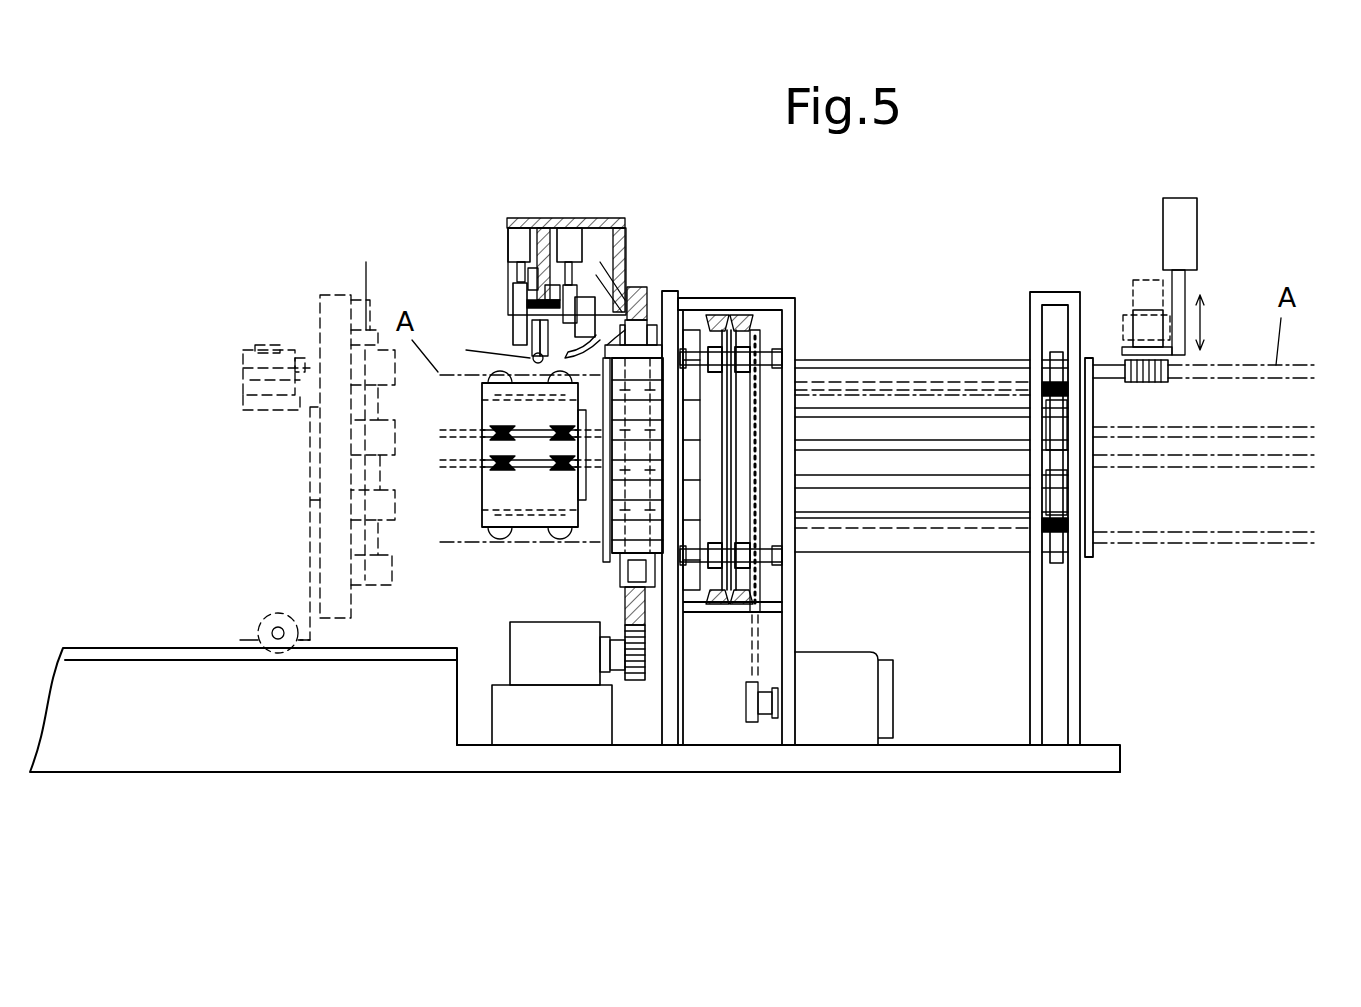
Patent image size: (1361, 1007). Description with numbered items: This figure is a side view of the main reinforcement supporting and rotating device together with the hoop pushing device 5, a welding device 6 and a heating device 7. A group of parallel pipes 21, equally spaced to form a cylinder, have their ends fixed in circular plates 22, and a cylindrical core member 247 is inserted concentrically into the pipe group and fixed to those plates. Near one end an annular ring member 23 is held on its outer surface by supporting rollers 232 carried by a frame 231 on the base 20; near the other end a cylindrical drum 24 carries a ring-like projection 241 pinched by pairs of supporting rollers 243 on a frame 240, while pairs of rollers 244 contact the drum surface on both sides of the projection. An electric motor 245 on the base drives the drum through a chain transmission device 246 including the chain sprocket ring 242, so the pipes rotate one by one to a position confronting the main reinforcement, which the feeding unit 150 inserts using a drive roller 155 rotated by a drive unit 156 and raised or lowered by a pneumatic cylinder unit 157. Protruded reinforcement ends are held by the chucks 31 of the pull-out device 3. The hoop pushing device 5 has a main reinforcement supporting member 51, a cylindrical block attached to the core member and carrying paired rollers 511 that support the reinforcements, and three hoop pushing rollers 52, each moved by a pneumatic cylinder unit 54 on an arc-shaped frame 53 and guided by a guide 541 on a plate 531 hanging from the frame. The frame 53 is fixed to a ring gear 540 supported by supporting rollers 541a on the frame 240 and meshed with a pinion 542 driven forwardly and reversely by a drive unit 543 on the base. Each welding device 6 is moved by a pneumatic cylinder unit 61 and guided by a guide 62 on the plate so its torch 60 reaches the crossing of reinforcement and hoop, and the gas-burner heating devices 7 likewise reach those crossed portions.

The main reinforcement pull-out device 3 is at (264, 256).
The chuck 31 is at (319, 436).
The hoop pushing device 5 is at (524, 247).
The welding device 6 is at (613, 290).
The heating device 7 is at (618, 300).
The base 20 is at (1118, 750).
The pipe 21 is at (958, 398).
The circular plate 22 is at (620, 562).
The annular ring member 23 is at (1050, 560).
The cylindrical drum 24 is at (790, 397).
The main reinforcement supporting member 51 is at (482, 507).
The hoop pushing roller 52 is at (525, 335).
The arc-shaped frame 53 is at (545, 228).
The pneumatic cylinder unit 54 is at (508, 247).
The torch 60 is at (584, 309).
The pneumatic cylinder unit 61 is at (570, 238).
The guide 62 is at (551, 265).
The main reinforcement feeding unit 150 is at (1227, 251).
The drive roller 155 is at (1158, 382).
The drive unit 156 is at (1143, 310).
The pneumatic cylinder unit 157 is at (1192, 236).
The frame 231 is at (1082, 680).
The supporting roller 232 is at (1068, 388).
The frame 240 is at (790, 298).
The ring-like projection 241 is at (728, 464).
The chain sprocket ring 242 is at (738, 494).
The supporting roller 243 is at (742, 314).
The roller 244 is at (788, 352).
The electric motor 245 is at (878, 686).
The chain transmission device 246 is at (752, 668).
The cylindrical core member 247 is at (598, 470).
The roller 511 is at (482, 398).
The plate 531 is at (512, 220).
The ring gear 540 is at (640, 290).
The guide 541 is at (522, 287).
The supporting roller 541a is at (641, 600).
The pinion 542 is at (635, 682).
The drive unit 543 is at (558, 690).